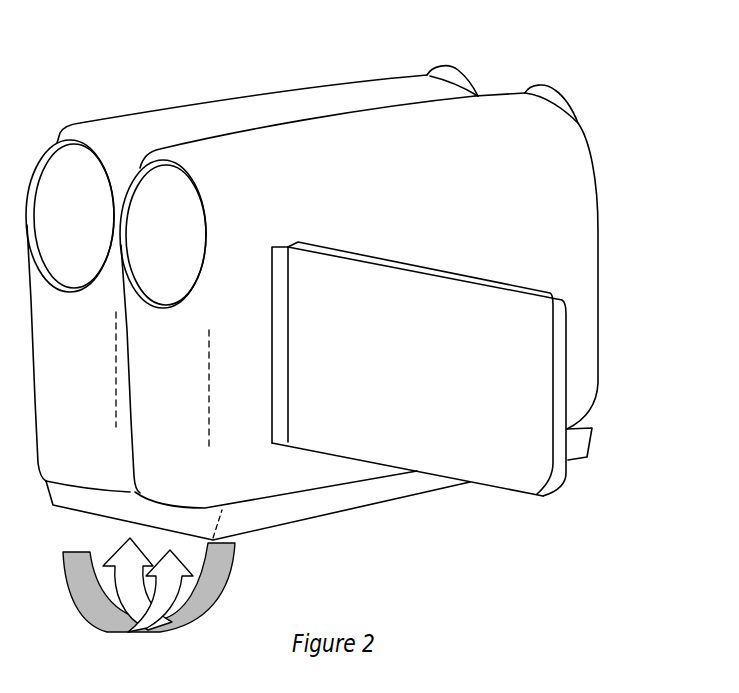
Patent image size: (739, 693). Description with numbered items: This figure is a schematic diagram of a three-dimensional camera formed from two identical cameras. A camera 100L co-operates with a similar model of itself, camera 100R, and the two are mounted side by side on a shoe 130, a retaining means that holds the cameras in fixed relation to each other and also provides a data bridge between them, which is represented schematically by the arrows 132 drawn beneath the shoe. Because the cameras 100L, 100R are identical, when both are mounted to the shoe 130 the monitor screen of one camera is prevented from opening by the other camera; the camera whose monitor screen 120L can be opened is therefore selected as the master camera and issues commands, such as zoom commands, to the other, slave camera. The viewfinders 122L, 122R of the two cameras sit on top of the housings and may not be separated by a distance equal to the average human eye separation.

The camera 100R is at (383, 83).
The camera 100L is at (575, 157).
The viewfinder 122R is at (444, 57).
The viewfinder 122L is at (579, 98).
The monitor screen 120L is at (534, 447).
The shoe 130 is at (334, 521).
The arrows 132 is at (167, 585).